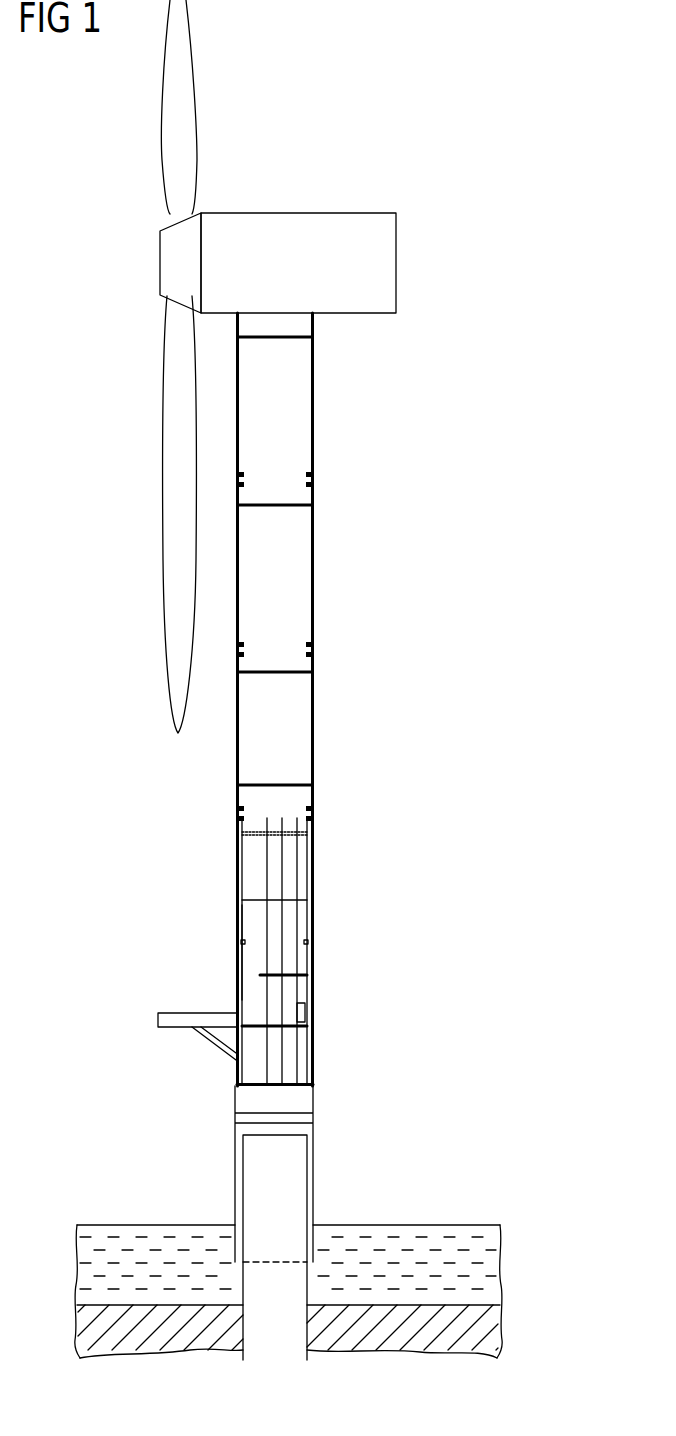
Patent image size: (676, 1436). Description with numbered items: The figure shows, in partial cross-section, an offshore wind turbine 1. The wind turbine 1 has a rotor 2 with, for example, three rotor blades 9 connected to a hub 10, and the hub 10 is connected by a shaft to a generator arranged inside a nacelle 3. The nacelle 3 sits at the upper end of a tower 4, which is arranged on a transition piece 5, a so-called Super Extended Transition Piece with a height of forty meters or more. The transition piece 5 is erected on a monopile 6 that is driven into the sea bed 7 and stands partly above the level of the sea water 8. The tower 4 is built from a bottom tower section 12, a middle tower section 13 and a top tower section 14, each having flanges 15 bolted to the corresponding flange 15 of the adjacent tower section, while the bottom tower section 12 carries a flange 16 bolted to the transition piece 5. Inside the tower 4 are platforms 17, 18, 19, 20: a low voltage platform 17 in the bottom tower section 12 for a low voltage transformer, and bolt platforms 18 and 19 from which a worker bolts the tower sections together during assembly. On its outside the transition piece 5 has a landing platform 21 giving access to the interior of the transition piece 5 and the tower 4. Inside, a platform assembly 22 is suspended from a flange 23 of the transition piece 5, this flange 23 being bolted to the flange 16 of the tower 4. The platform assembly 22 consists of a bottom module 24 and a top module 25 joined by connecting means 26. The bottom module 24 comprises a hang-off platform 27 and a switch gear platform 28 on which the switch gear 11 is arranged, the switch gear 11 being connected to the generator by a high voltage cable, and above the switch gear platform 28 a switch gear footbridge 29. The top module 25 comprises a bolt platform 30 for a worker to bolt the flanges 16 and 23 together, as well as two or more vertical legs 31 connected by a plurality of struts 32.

The wind turbine 1 is at (428, 96).
The rotor 2 is at (114, 208).
The nacelle 3 is at (360, 213).
The tower 4 is at (457, 405).
The transition piece 5 is at (313, 1042).
The monopile 6 is at (307, 1195).
The sea bed 7 is at (480, 1333).
The sea water 8 is at (495, 1272).
The rotor blade 9 is at (173, 489).
The hub 10 is at (168, 268).
The switch gear 11 is at (305, 1012).
The bottom tower section 12 is at (313, 728).
The middle tower section 13 is at (313, 578).
The top tower section 14 is at (313, 425).
The flange 15 is at (313, 463).
The flange 16 is at (313, 801).
The low voltage platform 17 is at (300, 784).
The bolt platform 18 is at (300, 675).
The bolt platform 19 is at (300, 508).
The platform 20 is at (295, 340).
The landing platform 21 is at (195, 1012).
The platform assembly 22 is at (457, 892).
The flange 23 is at (237, 832).
The bottom module 24 is at (313, 990).
The top module 25 is at (313, 910).
The connecting means 26 is at (313, 942).
The hang-off platform 27 is at (290, 1083).
The switch gear platform 28 is at (260, 1027).
The switch gear footbridge 29 is at (295, 975).
The bolt platform 30 is at (295, 838).
The vertical leg 31 is at (300, 848).
The strut 32 is at (290, 900).